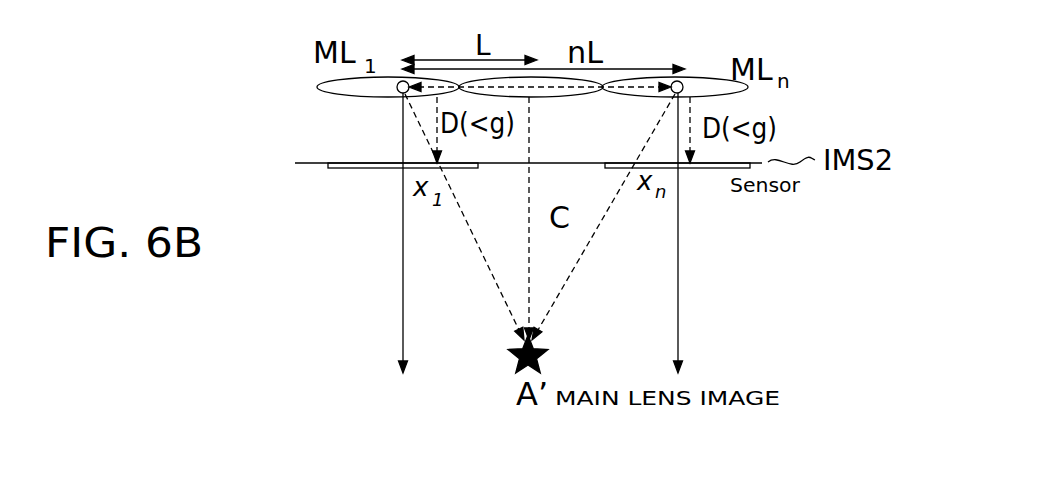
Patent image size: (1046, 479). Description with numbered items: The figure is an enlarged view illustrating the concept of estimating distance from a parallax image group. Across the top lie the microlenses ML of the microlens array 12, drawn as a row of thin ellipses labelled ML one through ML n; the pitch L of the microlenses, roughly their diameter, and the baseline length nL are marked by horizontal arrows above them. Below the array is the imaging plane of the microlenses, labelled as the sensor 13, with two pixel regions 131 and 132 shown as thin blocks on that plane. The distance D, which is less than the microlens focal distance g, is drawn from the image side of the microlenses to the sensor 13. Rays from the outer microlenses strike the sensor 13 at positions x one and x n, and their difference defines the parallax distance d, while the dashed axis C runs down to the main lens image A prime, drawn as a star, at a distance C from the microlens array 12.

The microlens array 12 is at (300, 85).
The image sensor 13 is at (282, 162).
The sensor pixel region 131 is at (375, 170).
The sensor pixel region 132 is at (711, 170).